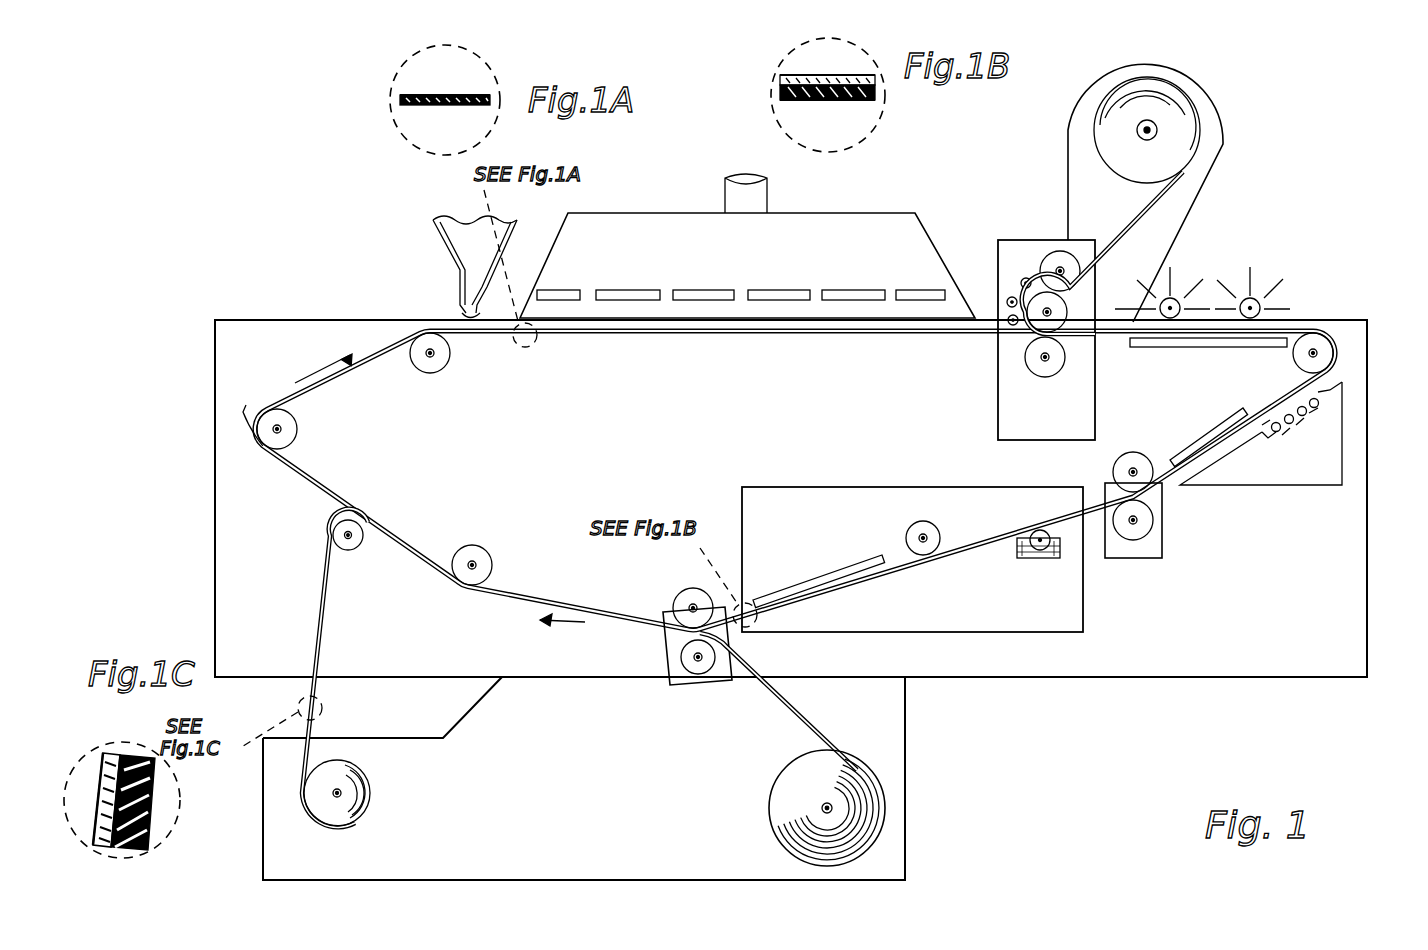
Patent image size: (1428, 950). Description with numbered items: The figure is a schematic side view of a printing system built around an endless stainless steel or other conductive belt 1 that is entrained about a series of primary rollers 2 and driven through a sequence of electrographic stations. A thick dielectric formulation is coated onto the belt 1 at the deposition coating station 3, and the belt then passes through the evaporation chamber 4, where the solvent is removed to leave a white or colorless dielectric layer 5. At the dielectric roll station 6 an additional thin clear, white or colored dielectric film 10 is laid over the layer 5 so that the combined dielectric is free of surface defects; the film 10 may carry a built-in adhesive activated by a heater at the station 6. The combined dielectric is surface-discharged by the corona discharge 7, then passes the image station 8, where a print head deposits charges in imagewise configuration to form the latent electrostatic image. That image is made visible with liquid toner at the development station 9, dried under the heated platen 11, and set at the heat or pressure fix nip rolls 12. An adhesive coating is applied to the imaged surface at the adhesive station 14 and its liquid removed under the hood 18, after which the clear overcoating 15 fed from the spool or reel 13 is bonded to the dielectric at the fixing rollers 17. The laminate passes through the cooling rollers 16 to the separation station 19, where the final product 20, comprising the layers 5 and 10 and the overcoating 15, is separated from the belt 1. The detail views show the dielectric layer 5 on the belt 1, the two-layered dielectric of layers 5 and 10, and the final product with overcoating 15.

In FIG. 1, the conductive belt 1 is at (388, 348).
In FIG. 1A, the conductive belt 1 is at (447, 106).
In FIG. 1B, the conductive belt 1 is at (855, 78).
In FIG. 1, the primary rollers 2 is at (447, 367).
In FIG. 1, the deposition coating station 3 is at (458, 285).
In FIG. 1, the evaporation chamber 4 is at (632, 232).
In FIG. 1A, the dielectric layer 5 is at (433, 95).
In FIG. 1B, the dielectric layer 5 is at (781, 81).
In FIG. 1C, the dielectric layer 5 is at (106, 758).
In FIG. 1, the dielectric roll station 6 is at (1034, 246).
In FIG. 1, the corona discharge 7 is at (1180, 298).
In FIG. 1, the image station 8 is at (1260, 298).
In FIG. 1, the development station 9 is at (1316, 421).
In FIG. 1, the dielectric film 10 is at (1134, 224).
In FIG. 1B, the dielectric film 10 is at (782, 93).
In FIG. 1C, the dielectric film 10 is at (115, 756).
In FIG. 1, the heated platen 11 is at (1200, 442).
In FIG. 1, the fix nip rolls 12 is at (1136, 453).
In FIG. 1, the spool or reel 13 is at (838, 774).
In FIG. 1, the adhesive coating station 14 is at (1040, 556).
In FIG. 1, the clear overcoating 15 is at (812, 728).
In FIG. 1C, the clear overcoating 15 is at (150, 822).
In FIG. 1, the cooling rollers 16 is at (485, 553).
In FIG. 1, the fixing rollers 17 is at (688, 590).
In FIG. 1, the hood 18 is at (883, 500).
In FIG. 1, the separation station 19 is at (358, 548).
In FIG. 1, the final product 20 is at (322, 629).